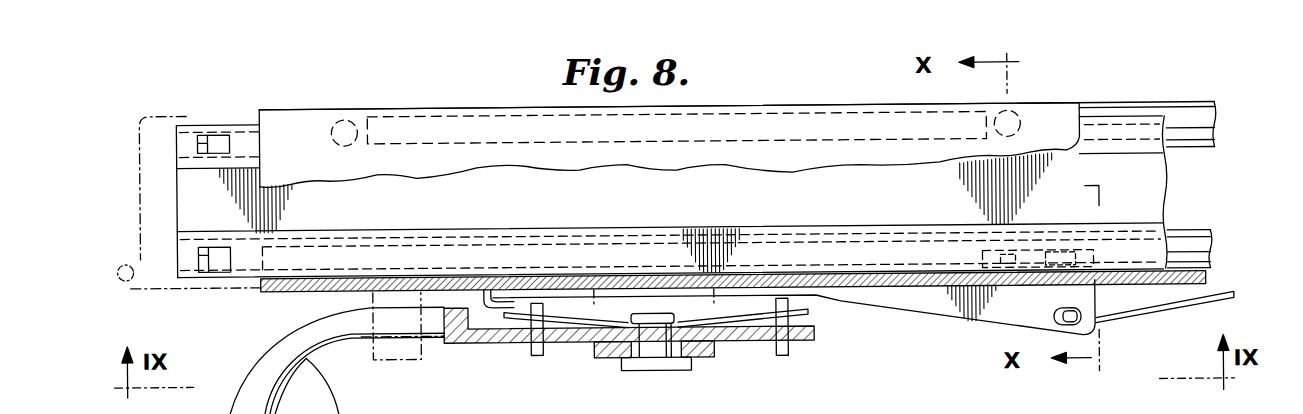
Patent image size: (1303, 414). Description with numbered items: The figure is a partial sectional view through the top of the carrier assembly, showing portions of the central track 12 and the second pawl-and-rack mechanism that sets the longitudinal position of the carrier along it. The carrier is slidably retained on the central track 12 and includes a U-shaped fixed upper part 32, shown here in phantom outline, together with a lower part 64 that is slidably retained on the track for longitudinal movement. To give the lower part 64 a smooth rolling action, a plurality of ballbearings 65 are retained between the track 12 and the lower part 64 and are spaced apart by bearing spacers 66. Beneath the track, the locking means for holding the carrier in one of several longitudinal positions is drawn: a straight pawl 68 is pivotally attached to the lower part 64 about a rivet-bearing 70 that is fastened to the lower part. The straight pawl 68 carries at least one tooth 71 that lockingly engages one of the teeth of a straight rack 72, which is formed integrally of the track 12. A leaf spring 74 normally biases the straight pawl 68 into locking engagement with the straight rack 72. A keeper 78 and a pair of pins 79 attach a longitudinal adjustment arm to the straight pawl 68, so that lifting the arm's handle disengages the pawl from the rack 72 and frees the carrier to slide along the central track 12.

The central track 12 is at (1140, 194).
The fixed upper part 32 is at (143, 158).
The lower part 64 is at (293, 119).
The ballbearings 65 is at (347, 122).
The bearing spacers 66 is at (810, 124).
The straight pawl 68 is at (903, 302).
The rivet-bearing 70 is at (643, 362).
The tooth 71 is at (1040, 256).
The straight rack 72 is at (650, 268).
The leaf spring 74 is at (1170, 306).
The keeper 78 is at (745, 320).
The pins 79 is at (533, 349).